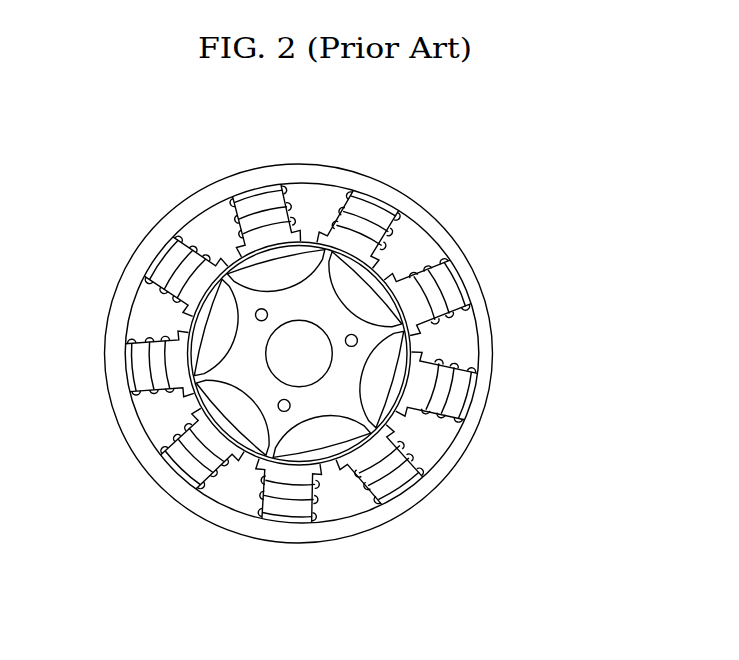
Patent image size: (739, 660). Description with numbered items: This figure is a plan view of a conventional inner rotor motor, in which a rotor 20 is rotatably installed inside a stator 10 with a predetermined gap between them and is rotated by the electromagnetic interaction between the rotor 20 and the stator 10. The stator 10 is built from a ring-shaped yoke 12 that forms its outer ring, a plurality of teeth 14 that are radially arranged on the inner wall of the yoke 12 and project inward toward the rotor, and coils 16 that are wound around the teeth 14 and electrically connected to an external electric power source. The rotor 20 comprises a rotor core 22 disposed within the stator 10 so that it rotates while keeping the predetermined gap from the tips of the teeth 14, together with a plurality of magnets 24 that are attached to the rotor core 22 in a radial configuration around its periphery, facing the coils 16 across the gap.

The stator 10 is at (450, 150).
The yoke 12 is at (420, 218).
The teeth 14 is at (443, 289).
The coils 16 is at (393, 206).
The rotor 20 is at (553, 333).
The rotor core 22 is at (408, 354).
The magnets 24 is at (400, 335).